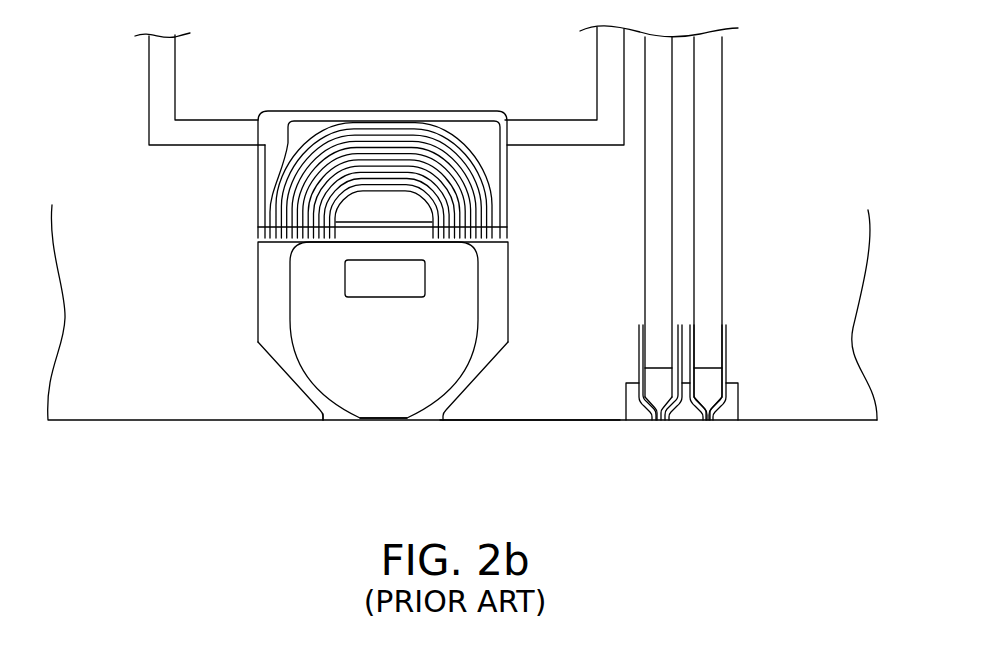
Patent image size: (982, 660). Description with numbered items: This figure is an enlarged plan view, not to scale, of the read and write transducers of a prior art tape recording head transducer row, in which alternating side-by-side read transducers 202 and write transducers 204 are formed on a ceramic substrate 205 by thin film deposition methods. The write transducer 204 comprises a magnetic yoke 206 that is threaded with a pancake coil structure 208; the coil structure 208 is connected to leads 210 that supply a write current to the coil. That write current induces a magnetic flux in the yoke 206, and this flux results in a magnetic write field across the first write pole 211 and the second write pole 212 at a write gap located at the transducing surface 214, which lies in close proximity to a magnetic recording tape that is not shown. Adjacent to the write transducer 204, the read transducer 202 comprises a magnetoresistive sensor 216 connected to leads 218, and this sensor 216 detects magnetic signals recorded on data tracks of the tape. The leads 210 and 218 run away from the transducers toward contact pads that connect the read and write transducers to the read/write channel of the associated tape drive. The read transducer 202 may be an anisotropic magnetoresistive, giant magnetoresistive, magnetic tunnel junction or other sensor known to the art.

The read transducer 202 is at (740, 400).
The write transducer 204 is at (258, 278).
The ceramic substrate 205 is at (548, 421).
The magnetic yoke 206 is at (284, 375).
The pancake coil structure 208 is at (262, 212).
The leads 210 is at (176, 70).
The first write pole 211 is at (337, 420).
The second write pole 212 is at (393, 421).
The transducing surface 214 is at (145, 421).
The magnetoresistive sensor 216 is at (682, 421).
The leads 218 is at (703, 133).